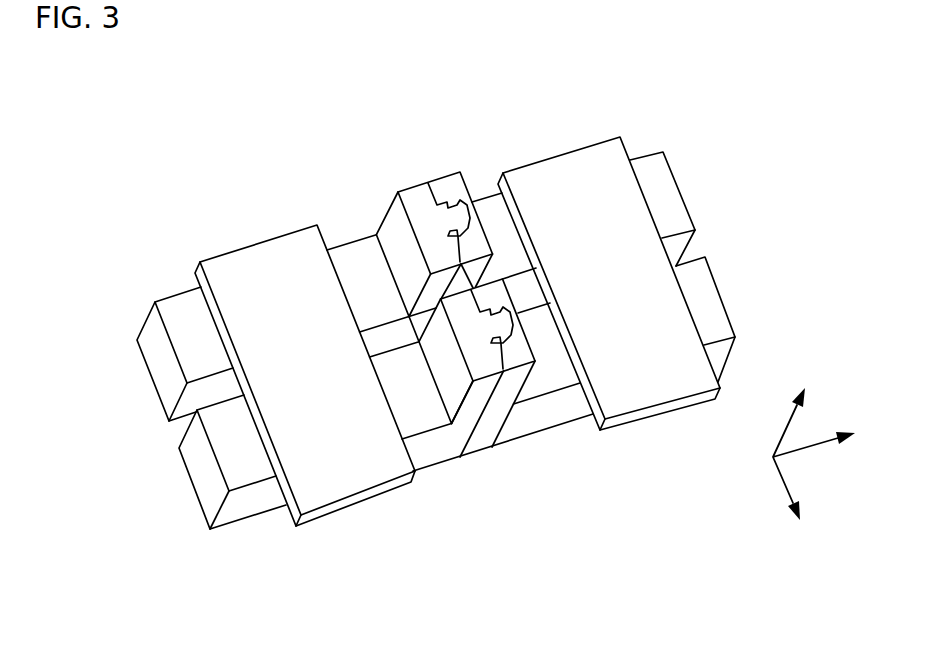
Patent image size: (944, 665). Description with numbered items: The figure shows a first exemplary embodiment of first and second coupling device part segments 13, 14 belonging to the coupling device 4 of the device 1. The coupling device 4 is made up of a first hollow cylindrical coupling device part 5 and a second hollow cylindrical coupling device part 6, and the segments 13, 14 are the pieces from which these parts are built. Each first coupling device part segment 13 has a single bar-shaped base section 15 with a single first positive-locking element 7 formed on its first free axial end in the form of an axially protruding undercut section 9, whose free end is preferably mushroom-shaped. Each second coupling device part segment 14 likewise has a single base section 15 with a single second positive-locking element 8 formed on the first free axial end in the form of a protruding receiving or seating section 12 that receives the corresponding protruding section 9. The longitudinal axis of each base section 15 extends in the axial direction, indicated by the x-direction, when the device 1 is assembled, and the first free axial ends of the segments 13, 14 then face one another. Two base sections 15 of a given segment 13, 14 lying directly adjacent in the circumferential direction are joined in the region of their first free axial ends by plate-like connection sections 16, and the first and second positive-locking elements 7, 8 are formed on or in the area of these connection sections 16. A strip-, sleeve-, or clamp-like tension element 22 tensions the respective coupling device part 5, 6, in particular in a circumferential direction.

The device 1 is at (690, 98).
The coupling device 4 is at (296, 118).
The first coupling device part 5 is at (247, 552).
The second coupling device part 6 is at (532, 455).
The first positive-locking element 7 is at (424, 160).
The second positive-locking element 8 is at (507, 290).
The protruding section 9 is at (455, 205).
The seating section 12 is at (530, 328).
The first coupling device part segment 13 is at (291, 192).
The second coupling device part segment 14 is at (575, 128).
The base section 15 is at (203, 313).
The connection section 16 is at (504, 430).
The tension element 22 is at (238, 263).